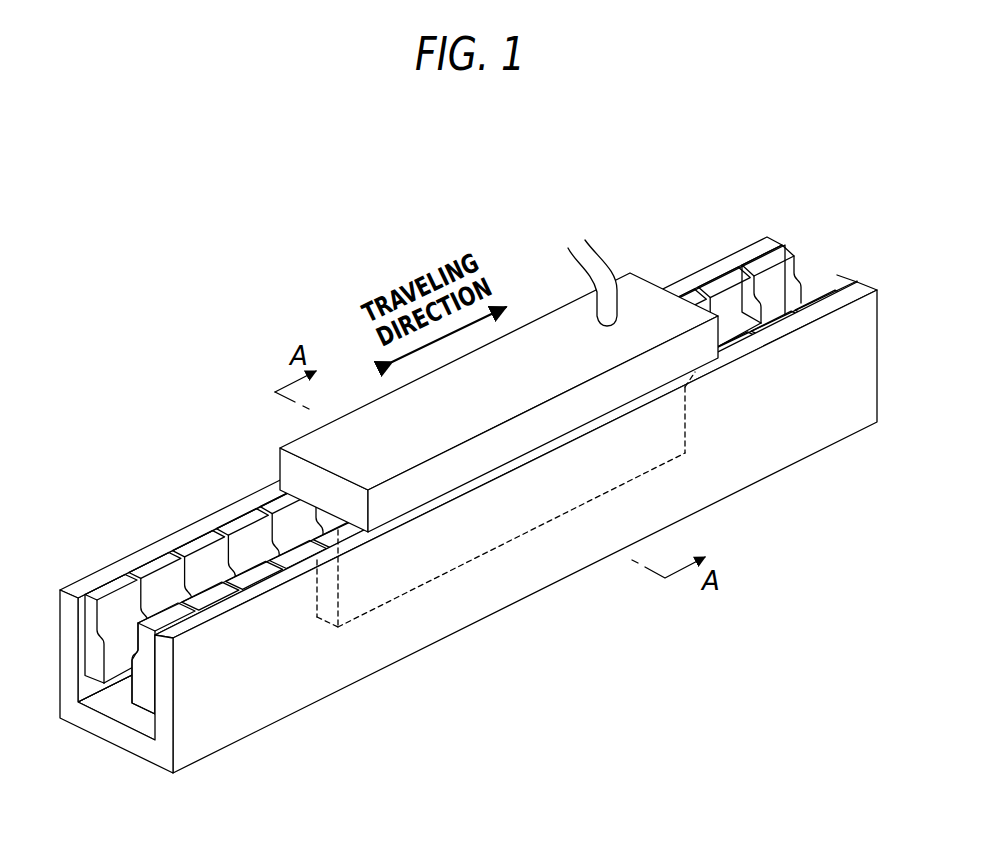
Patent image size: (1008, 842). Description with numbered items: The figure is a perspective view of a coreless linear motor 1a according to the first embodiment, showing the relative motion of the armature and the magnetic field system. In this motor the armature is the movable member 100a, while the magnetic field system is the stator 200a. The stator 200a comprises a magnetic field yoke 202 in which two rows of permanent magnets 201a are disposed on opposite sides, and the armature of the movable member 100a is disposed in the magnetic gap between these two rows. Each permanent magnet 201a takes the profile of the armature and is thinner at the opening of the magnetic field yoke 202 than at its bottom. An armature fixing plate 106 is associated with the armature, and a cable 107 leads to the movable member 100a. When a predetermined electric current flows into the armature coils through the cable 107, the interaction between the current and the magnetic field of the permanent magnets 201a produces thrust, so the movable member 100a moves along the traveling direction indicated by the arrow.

The coreless linear motor 1a is at (468, 463).
The movable member 100a is at (499, 451).
The armature fixing plate 106 is at (405, 502).
The cable 107 is at (593, 262).
The stator 200a is at (468, 505).
The permanent magnet 201a is at (745, 335).
The magnetic field yoke 202 is at (468, 505).